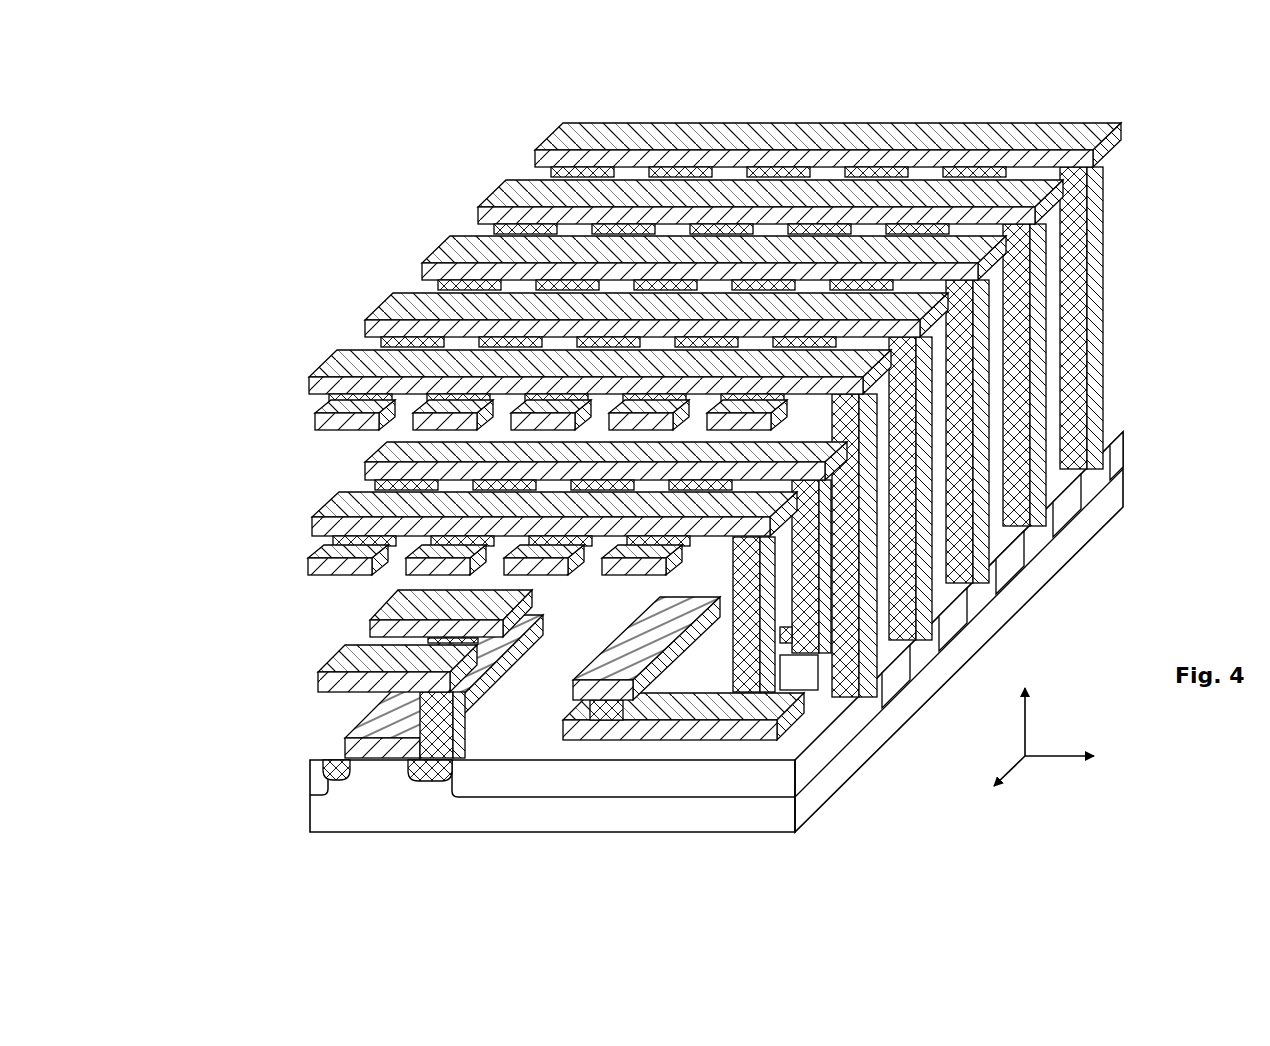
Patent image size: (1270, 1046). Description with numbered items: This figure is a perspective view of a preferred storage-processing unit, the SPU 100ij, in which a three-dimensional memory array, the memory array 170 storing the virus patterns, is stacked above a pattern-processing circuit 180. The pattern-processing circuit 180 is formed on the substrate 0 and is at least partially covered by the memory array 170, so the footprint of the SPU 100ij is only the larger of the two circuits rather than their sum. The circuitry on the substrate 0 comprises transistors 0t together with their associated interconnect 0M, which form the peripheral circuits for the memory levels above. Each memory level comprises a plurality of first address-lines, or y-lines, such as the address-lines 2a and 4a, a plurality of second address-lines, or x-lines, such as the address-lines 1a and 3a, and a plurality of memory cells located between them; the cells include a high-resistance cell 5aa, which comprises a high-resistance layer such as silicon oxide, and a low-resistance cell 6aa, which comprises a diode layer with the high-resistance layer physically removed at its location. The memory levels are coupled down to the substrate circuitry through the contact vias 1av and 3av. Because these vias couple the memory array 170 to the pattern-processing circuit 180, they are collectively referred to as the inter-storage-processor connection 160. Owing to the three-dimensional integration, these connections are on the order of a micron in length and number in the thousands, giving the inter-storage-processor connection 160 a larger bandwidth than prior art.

The SPU 100ij is at (408, 116).
The 3D-M array 170 is at (221, 557).
The pattern-processing circuit 180 is at (221, 605).
The first address-line 4a is at (330, 354).
The low-resistance 3D-P cell 6aa is at (330, 396).
The second address-line 3a is at (327, 431).
The first address-line 2a is at (332, 496).
The high-resistance 3D-P cell 5aa is at (330, 537).
The second address-line 1a is at (330, 568).
The interconnect 0M is at (336, 662).
The transistor 0t is at (343, 757).
The substrate 0 is at (716, 632).
The contact via 1av is at (740, 598).
The contact via 3av is at (848, 598).
The inter-storage-processor (ISP) connection 160 is at (733, 600).